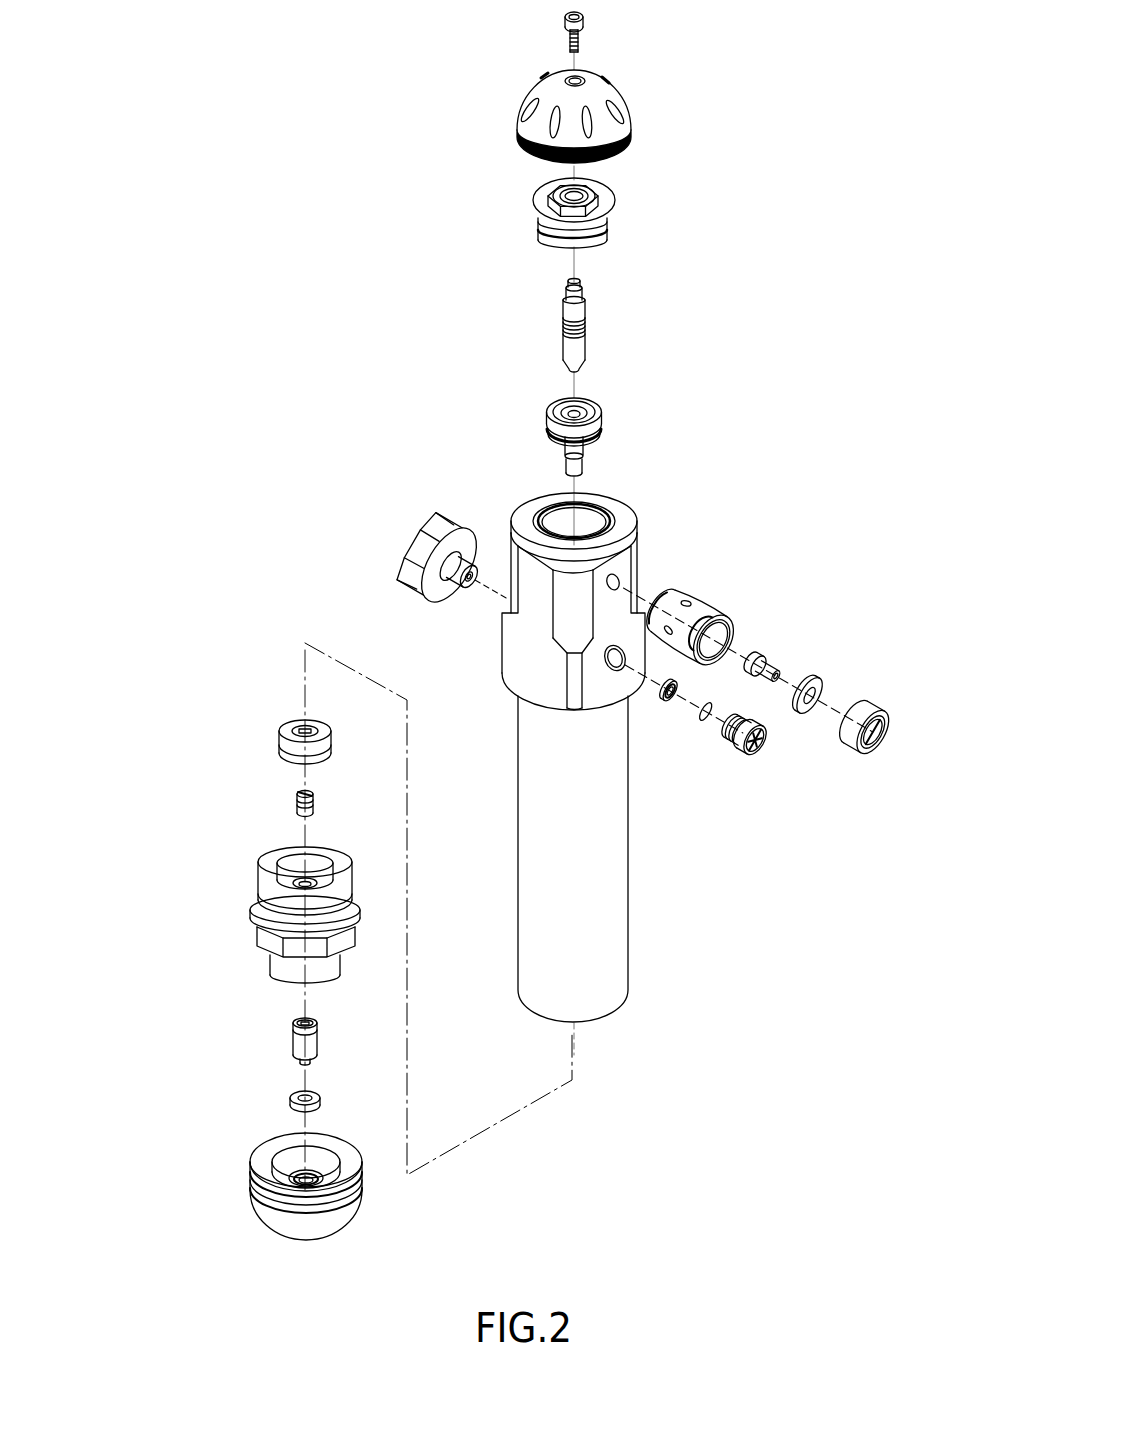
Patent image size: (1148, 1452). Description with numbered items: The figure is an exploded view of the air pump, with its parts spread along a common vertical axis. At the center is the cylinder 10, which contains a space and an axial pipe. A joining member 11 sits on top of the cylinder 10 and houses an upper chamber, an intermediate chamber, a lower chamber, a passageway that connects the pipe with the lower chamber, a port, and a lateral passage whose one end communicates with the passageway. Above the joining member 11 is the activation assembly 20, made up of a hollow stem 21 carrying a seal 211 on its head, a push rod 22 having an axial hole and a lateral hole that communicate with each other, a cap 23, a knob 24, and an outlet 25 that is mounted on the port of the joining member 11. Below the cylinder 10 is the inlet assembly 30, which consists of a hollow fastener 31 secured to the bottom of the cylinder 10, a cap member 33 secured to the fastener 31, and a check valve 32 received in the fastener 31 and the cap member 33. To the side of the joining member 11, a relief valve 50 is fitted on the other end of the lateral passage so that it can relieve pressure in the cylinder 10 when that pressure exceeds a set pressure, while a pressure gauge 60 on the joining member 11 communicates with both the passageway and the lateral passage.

The cylinder 10 is at (618, 885).
The joining member 11 is at (630, 553).
The activation assembly 20 is at (663, 249).
The hollow stem 21 is at (568, 447).
The seal 211 is at (555, 398).
The push rod 22 is at (580, 347).
The cap 23 is at (612, 200).
The knob 24 is at (612, 88).
The outlet 25 is at (783, 638).
The inlet assembly 30 is at (240, 973).
The hollow fastener 31 is at (262, 897).
The check valve 32 is at (297, 1040).
The cap member 33 is at (258, 1160).
The relief valve 50 is at (704, 742).
The pressure gauge 60 is at (422, 535).